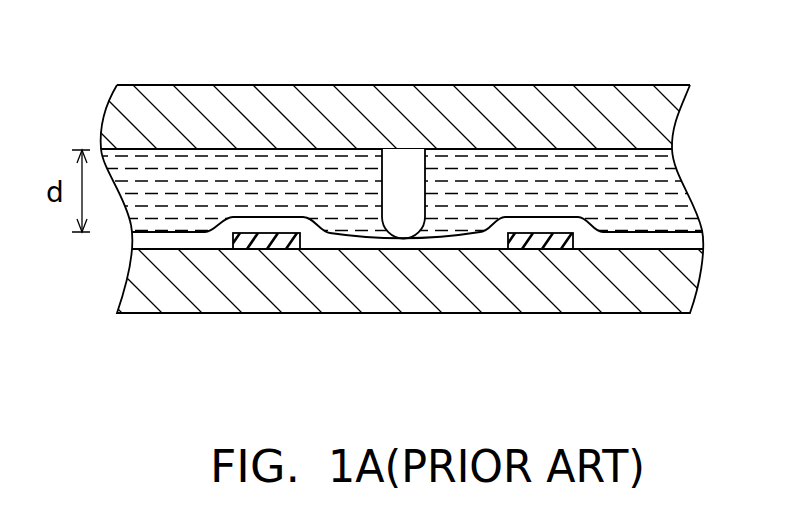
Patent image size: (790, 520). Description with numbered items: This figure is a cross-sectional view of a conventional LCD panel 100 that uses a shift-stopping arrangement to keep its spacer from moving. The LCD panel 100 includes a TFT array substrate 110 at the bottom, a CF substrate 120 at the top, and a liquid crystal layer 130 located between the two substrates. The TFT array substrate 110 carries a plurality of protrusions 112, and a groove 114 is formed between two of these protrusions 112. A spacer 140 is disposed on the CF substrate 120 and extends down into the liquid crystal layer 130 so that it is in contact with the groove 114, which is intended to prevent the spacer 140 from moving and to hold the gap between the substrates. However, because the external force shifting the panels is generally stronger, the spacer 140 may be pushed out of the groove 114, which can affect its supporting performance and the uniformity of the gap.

The LCD panel 100 is at (418, 217).
The TFT array substrate 110 is at (421, 169).
The protrusions 112 is at (258, 249).
The groove 114 is at (362, 231).
The CF substrate 120 is at (657, 122).
The liquid crystal layer 130 is at (657, 190).
The spacer 140 is at (413, 170).